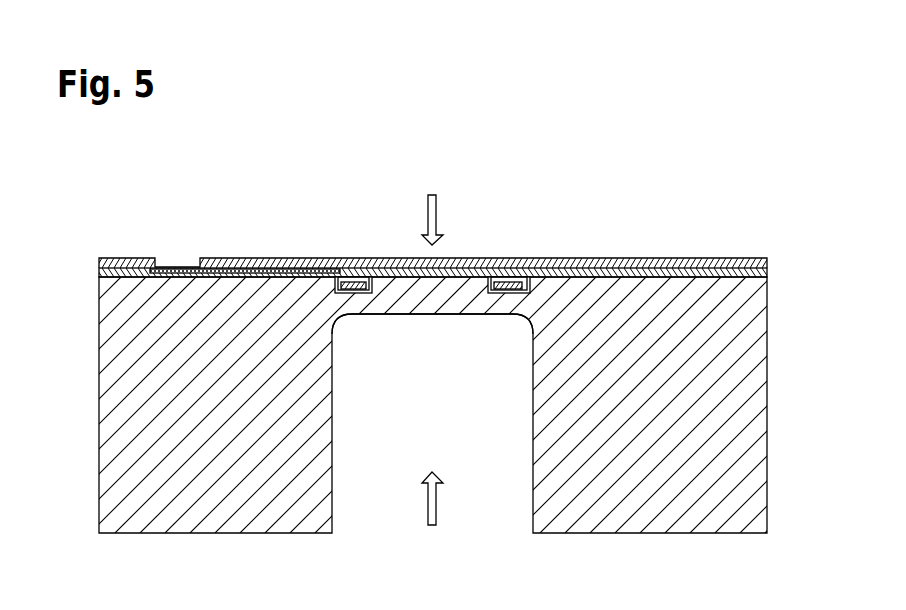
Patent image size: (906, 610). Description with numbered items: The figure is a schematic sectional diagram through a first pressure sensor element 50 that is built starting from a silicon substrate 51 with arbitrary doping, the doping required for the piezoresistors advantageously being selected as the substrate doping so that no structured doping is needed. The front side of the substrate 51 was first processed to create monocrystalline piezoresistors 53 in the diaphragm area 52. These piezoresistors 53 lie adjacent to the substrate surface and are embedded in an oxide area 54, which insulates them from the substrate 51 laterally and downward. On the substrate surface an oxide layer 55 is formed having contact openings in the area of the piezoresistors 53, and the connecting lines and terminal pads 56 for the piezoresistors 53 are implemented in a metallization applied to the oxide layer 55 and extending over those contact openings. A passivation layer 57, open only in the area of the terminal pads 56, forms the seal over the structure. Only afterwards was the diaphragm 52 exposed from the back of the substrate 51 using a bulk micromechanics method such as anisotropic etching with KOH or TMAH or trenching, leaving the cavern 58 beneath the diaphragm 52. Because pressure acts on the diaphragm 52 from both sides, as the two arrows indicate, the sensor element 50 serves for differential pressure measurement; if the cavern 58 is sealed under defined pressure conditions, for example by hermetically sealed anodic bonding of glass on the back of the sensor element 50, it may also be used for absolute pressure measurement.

The pressure sensor element 50 is at (744, 222).
The silicon substrate 51 is at (118, 412).
The diaphragm 52 is at (399, 300).
The piezoresistors 53 is at (354, 276).
The oxide area 54 is at (331, 272).
The oxide layer 55 is at (686, 262).
The terminal pads 56 is at (183, 270).
The passivation layer 57 is at (608, 272).
The cavern 58 is at (447, 372).